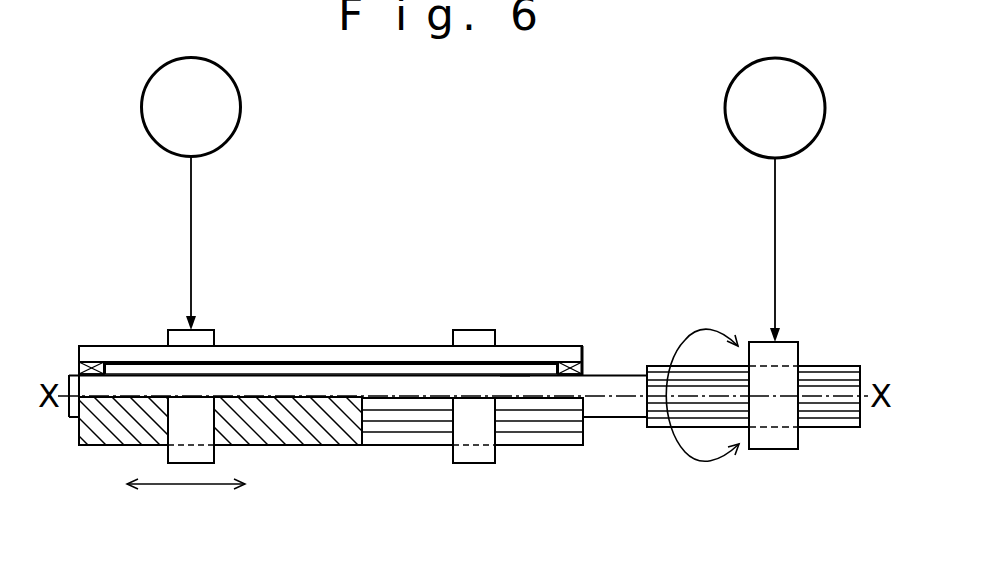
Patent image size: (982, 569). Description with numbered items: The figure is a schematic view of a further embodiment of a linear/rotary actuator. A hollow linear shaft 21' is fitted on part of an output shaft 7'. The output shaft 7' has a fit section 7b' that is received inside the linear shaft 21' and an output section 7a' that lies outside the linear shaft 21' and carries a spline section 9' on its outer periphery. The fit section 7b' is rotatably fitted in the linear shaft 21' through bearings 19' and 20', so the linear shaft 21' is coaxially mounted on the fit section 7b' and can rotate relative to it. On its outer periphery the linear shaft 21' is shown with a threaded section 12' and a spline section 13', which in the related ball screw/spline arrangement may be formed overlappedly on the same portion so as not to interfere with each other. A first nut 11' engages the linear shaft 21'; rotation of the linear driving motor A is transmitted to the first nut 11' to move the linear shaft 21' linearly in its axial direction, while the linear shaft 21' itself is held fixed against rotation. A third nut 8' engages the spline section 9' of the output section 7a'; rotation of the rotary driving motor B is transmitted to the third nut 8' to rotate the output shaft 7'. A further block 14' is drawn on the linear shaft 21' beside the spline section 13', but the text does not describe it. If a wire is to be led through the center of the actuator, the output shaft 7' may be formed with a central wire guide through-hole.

The linear driving motor A is at (148, 128).
The rotary driving motor B is at (728, 127).
The output shaft 7' is at (358, 411).
The output section 7a' is at (768, 364).
The fit section 7b' is at (538, 446).
The third nut 8' is at (773, 429).
The spline section 9' is at (832, 463).
The first nut 11' is at (150, 408).
The threaded section 12' is at (217, 442).
The spline section 13' is at (472, 457).
The bearing block 14' is at (484, 429).
The bearing 19' is at (73, 333).
The bearing 20' is at (360, 335).
The linear shaft 21' is at (333, 313).